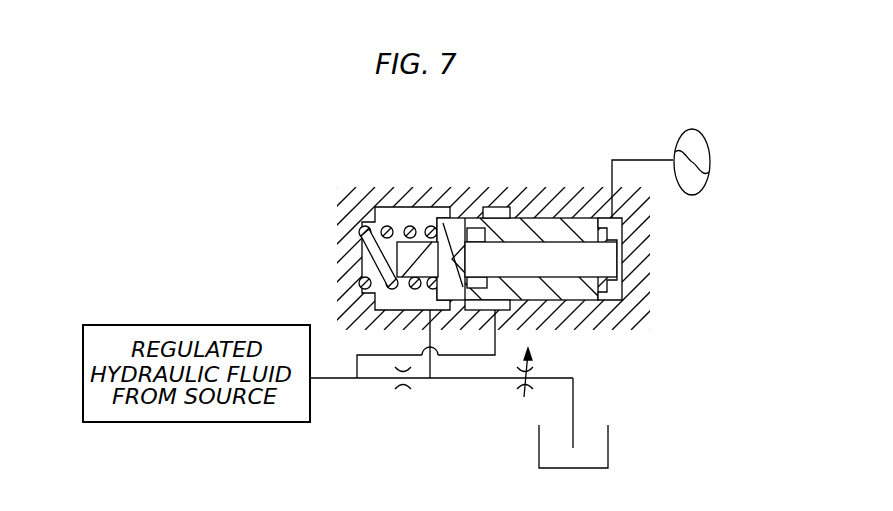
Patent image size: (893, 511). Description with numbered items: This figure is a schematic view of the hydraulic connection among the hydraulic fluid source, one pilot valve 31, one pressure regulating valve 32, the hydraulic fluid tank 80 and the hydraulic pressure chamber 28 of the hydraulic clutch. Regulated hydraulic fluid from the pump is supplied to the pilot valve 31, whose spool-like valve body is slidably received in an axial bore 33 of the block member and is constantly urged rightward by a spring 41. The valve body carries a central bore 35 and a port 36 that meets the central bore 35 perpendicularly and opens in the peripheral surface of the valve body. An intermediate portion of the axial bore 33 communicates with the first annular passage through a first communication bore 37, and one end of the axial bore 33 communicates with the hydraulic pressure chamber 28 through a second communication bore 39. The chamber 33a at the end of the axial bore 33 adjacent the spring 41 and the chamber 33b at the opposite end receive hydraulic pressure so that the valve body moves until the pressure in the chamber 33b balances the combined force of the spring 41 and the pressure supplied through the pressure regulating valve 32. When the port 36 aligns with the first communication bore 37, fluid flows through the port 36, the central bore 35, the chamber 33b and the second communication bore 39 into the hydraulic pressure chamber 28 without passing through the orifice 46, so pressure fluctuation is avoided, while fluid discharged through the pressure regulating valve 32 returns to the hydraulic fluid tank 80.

The hydraulic pressure chamber 28 is at (708, 142).
The pilot valve 31 is at (628, 307).
The pressure regulating valve 32 is at (522, 389).
The axial bore 33 is at (563, 287).
The chamber at one end of the axial bore 33a is at (378, 258).
The chamber at the other end of the axial bore 33b is at (614, 229).
The central bore 35 is at (602, 262).
The port 36 is at (477, 330).
The first communication bore 37 is at (508, 304).
The second communication bore 39 is at (633, 160).
The spring 41 is at (363, 233).
The orifice 46 is at (403, 389).
The hydraulic fluid tank 80 is at (608, 437).